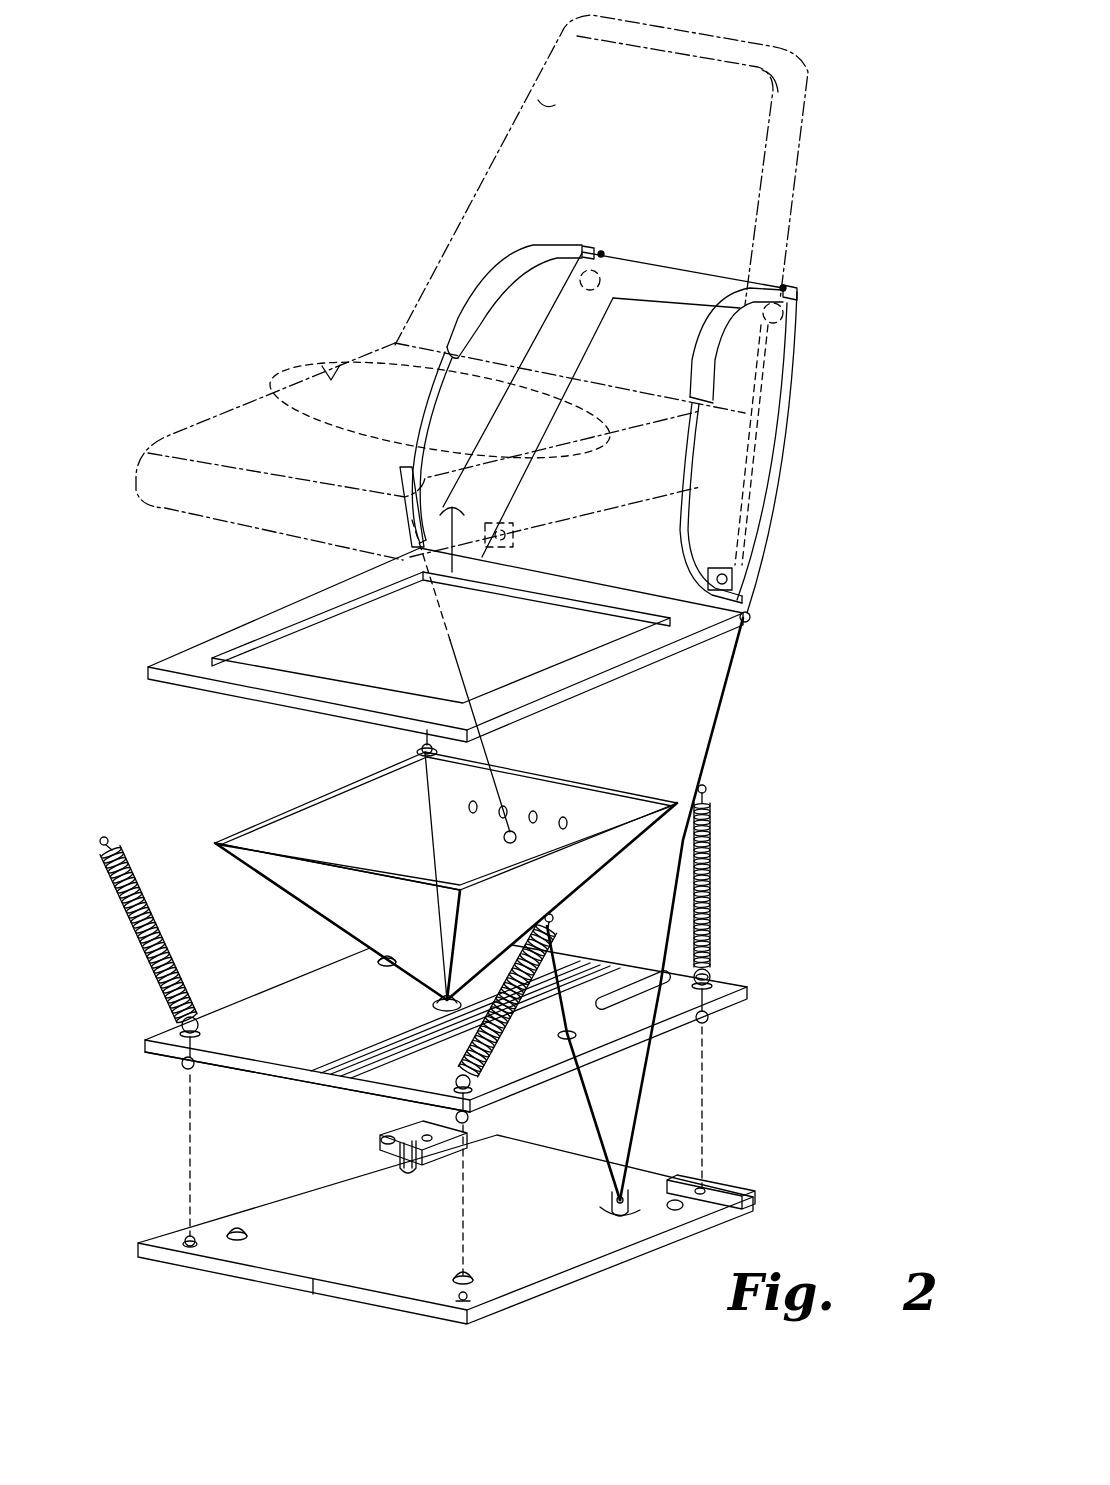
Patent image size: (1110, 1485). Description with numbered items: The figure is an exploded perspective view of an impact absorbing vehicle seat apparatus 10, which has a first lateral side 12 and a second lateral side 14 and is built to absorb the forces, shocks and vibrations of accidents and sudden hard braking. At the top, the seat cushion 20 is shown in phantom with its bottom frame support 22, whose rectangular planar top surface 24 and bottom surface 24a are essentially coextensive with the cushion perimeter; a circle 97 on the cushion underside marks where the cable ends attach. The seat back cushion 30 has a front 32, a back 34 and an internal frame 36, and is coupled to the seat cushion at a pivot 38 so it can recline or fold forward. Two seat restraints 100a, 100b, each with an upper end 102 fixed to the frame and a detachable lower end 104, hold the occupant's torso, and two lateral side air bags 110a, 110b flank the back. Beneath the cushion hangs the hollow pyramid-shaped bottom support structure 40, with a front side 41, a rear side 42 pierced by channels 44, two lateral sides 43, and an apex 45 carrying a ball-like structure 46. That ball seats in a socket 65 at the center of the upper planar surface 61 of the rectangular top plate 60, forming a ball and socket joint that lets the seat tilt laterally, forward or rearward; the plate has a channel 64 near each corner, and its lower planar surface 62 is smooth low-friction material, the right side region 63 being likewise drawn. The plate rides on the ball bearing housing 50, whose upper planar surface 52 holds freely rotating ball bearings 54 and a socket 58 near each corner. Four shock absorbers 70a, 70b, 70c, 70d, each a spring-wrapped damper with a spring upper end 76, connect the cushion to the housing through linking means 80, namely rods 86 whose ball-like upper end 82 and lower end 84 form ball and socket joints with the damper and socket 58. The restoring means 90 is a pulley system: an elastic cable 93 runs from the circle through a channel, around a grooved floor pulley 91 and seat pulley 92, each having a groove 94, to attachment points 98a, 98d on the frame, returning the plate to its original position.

The vehicle seat apparatus 10 is at (484, 669).
The first lateral side 12 is at (514, 287).
The second lateral side 14 is at (649, 180).
The seat cushion 20 is at (435, 451).
The bottom frame support 22 is at (419, 645).
The top surface 24 is at (205, 645).
The bottom surface 24a is at (175, 682).
The seat back cushion 30 is at (620, 140).
The front 32 is at (538, 100).
The back 34 is at (822, 100).
The internal frame 36 is at (601, 506).
The pivot 38 is at (760, 617).
The bottom support structure 40 is at (444, 875).
The front side 41 is at (300, 890).
The rear side 42 is at (510, 773).
The lateral sides 43 is at (335, 795).
The channels 44 is at (565, 823).
The apex 45 is at (438, 1000).
The ball-like structure 46 is at (445, 1006).
The ball bearing housing 50 is at (300, 1182).
The upper planar surface 52 is at (443, 1222).
The ball bearings 54 is at (238, 1228).
The socket 58 is at (188, 1235).
The top plate 60 is at (467, 1073).
The upper planar surface 61 is at (240, 1075).
The lower planar surface 62 is at (313, 1083).
The right side 63 is at (750, 990).
The channel 64 is at (192, 1018).
The socket 65 is at (440, 1022).
The shock absorber 70a is at (490, 1065).
The shock absorber 70b is at (131, 905).
The shock absorber 70c is at (712, 870).
The shock absorber 70d is at (420, 748).
The upper end of spring 76 is at (107, 840).
The means for linking 80 is at (735, 977).
The upper end 82 is at (718, 970).
The lower end 84 is at (710, 1020).
The rod 86 is at (175, 1073).
The pulley system 90 is at (669, 919).
The floor pulleys 91 is at (605, 1210).
The seat pulleys 92 is at (740, 580).
The elastic pulley cable 93 is at (707, 720).
The groove 94 is at (400, 1165).
The circle 97 is at (325, 375).
The attachment point 98a is at (785, 285).
The attachment point 98d is at (602, 250).
The seat restraint 100a is at (735, 500).
The seat restraint 100b is at (413, 450).
The upper end 102 is at (588, 245).
The lower end 104 is at (415, 540).
The lateral side air bag 110a is at (735, 328).
The lateral side air bag 110b is at (475, 290).